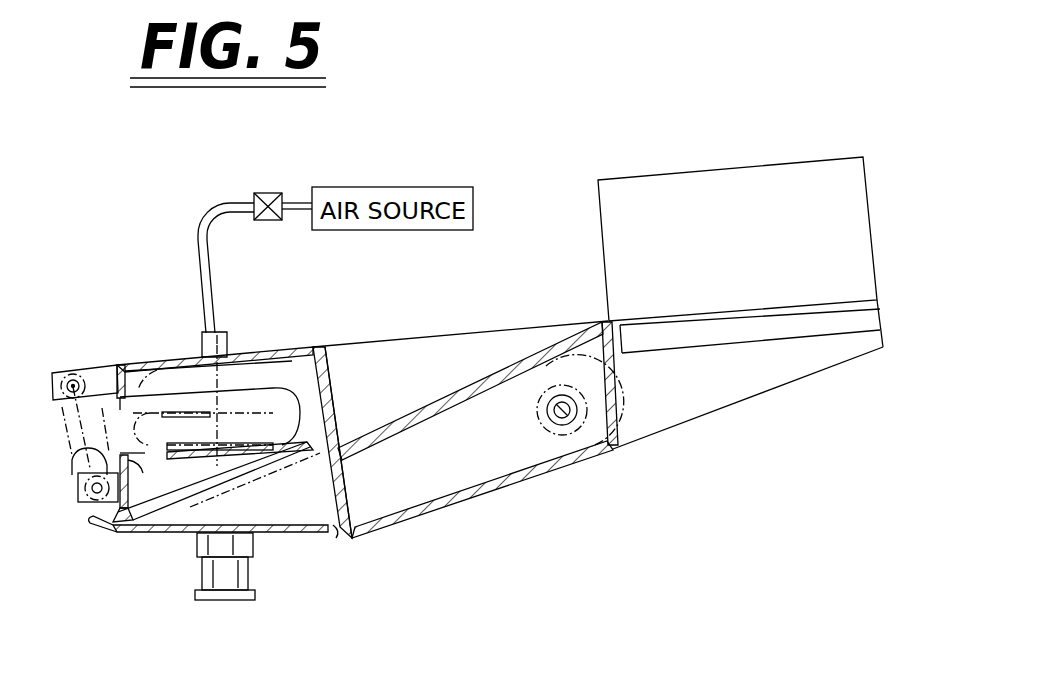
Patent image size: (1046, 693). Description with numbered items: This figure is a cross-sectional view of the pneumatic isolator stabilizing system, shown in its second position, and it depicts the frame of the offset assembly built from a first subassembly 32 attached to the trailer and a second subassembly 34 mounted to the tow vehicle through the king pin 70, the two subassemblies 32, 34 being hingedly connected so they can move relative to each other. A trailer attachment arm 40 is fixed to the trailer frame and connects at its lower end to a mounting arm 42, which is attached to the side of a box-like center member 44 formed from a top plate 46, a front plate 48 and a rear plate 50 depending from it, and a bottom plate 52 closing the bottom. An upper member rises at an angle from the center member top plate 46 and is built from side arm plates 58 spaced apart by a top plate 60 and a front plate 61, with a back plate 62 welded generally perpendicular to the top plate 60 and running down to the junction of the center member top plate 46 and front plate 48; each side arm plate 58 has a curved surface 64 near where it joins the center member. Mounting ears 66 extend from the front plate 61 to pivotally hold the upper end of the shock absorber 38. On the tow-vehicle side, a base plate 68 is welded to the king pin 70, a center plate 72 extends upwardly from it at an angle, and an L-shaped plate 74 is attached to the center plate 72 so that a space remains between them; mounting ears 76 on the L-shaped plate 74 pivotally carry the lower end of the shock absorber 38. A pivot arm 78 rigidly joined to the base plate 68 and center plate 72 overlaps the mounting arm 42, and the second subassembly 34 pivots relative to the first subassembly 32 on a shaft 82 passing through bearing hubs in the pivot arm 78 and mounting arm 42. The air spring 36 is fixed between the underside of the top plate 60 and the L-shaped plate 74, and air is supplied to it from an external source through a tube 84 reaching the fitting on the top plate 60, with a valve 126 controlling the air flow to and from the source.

The first subassembly 32 is at (782, 397).
The second subassembly 34 is at (108, 536).
The air spring 36 is at (168, 356).
The shock absorber 38 is at (72, 463).
The trailer attachment arm 40 is at (708, 190).
The mounting arm 42 is at (703, 390).
The center member 44 is at (511, 492).
The top plate 46 is at (460, 397).
The front plate 48 is at (342, 498).
The rear plate 50 is at (613, 375).
The bottom plate 52 is at (377, 534).
The side arm plate 58 is at (379, 356).
The top plate 60 is at (244, 347).
The front plate 61 is at (133, 370).
The back plate 62 is at (324, 404).
The curved surface 64 is at (277, 403).
The mounting ears 66 is at (88, 372).
The base plate 68 is at (158, 535).
The king pin 70 is at (213, 574).
The center plate 72 is at (219, 479).
The L-shaped plate 74 is at (137, 450).
The mounting ears 76 is at (78, 508).
The pivot arm 78 is at (338, 537).
The shaft 82 is at (550, 412).
The tube 84 is at (198, 242).
The valve 126 is at (264, 193).